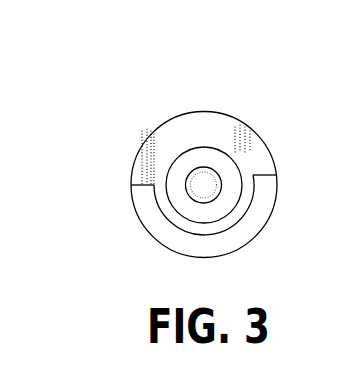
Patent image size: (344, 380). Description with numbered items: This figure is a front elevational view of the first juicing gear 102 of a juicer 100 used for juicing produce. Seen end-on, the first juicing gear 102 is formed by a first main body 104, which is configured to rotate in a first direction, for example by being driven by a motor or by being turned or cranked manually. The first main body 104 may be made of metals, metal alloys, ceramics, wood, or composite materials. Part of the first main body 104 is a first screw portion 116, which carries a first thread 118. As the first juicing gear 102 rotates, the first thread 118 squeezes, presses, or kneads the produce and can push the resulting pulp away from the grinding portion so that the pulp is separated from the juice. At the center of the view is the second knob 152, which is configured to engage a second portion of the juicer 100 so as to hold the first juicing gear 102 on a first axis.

The juicer 100 is at (122, 122).
The first juicing gear 102 is at (122, 122).
The first main body 104 is at (131, 160).
The first screw portion 116 is at (183, 113).
The first thread 118 is at (153, 213).
The second knob 152 is at (206, 166).